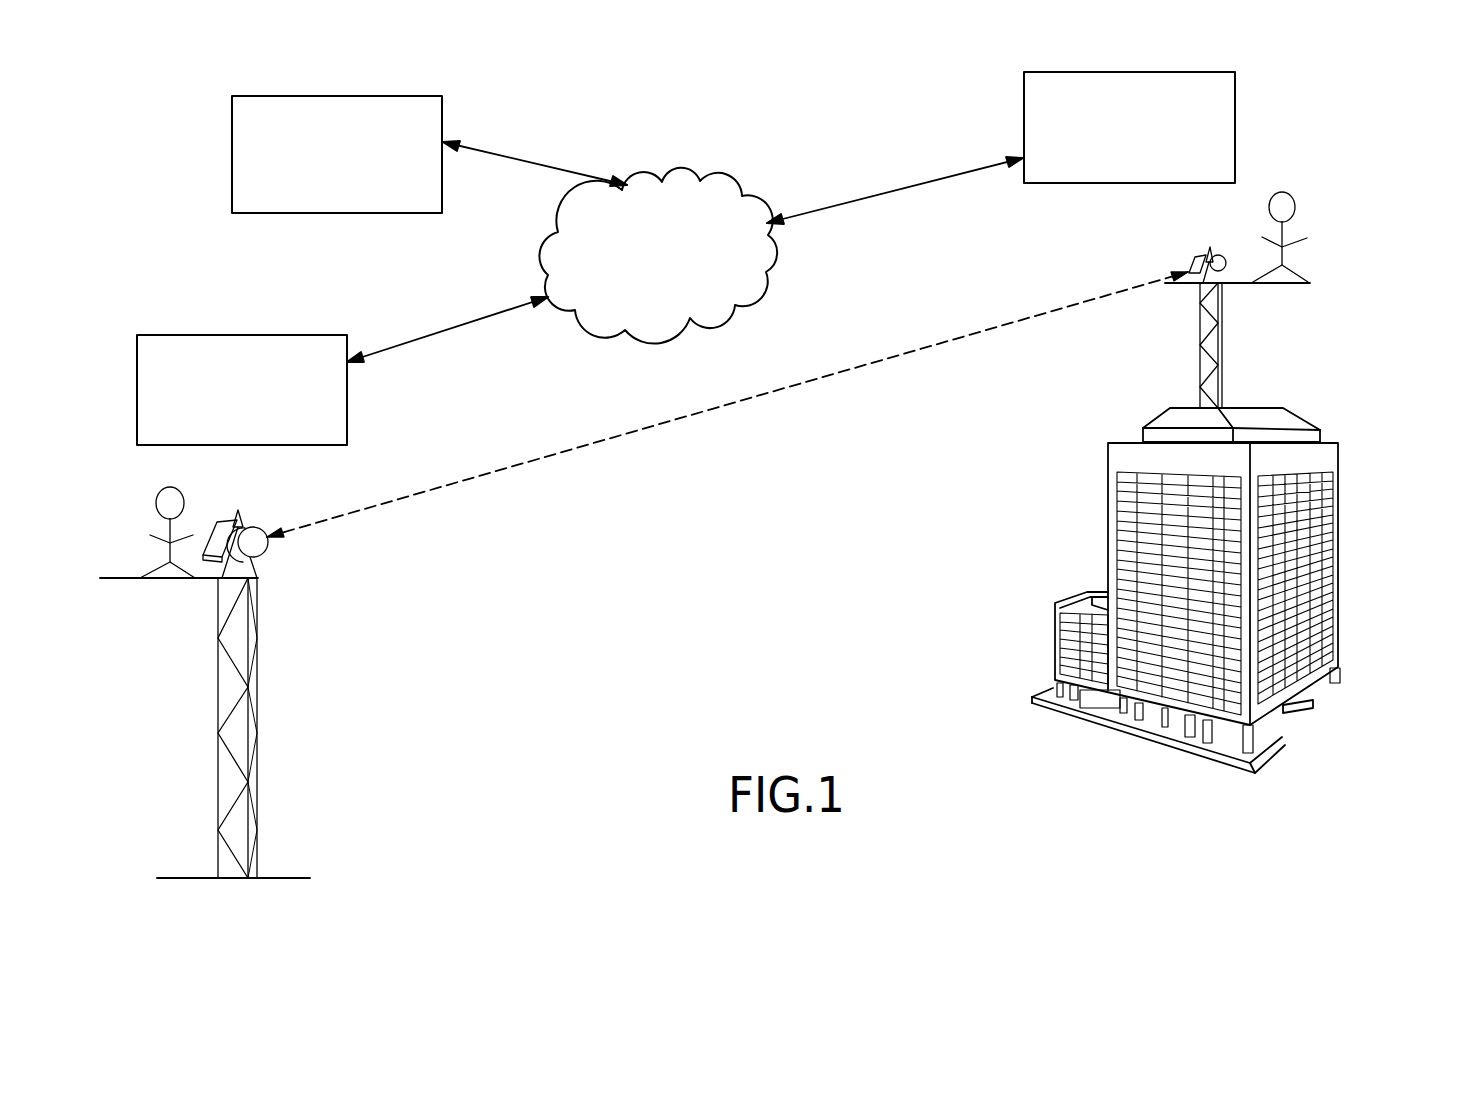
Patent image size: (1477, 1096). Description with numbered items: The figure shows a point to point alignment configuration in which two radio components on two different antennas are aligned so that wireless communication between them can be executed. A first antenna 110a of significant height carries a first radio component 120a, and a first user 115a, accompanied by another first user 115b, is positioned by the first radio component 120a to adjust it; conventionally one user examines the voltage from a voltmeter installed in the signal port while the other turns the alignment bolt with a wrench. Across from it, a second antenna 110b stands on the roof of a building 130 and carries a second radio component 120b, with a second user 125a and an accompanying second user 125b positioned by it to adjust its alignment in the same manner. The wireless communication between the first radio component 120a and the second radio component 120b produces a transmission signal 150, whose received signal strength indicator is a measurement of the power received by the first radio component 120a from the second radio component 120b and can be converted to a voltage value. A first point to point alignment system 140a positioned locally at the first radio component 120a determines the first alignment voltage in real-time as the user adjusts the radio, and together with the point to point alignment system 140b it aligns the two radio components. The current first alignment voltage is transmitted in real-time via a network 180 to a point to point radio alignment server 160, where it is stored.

The first antenna 110a is at (258, 693).
The second antenna 110b is at (1223, 345).
The first user 115a is at (246, 522).
The first user 115b is at (184, 498).
The first radio component 120a is at (268, 548).
The second radio component 120b is at (1192, 259).
The second user 125a is at (1359, 236).
The second user 125b is at (1296, 205).
The building 130 is at (1307, 424).
The first point to point alignment system 140a is at (349, 384).
The point to point alignment system 140b is at (1236, 131).
The transmission signal 150 is at (725, 404).
The point to point radio alignment server 160 is at (232, 151).
The network 180 is at (546, 253).